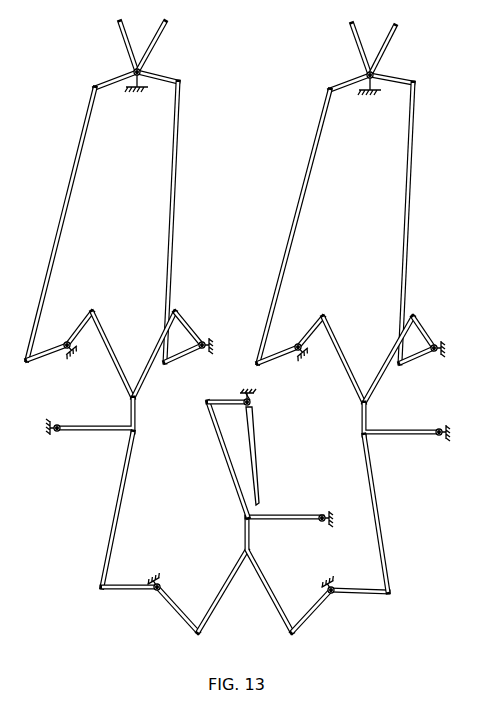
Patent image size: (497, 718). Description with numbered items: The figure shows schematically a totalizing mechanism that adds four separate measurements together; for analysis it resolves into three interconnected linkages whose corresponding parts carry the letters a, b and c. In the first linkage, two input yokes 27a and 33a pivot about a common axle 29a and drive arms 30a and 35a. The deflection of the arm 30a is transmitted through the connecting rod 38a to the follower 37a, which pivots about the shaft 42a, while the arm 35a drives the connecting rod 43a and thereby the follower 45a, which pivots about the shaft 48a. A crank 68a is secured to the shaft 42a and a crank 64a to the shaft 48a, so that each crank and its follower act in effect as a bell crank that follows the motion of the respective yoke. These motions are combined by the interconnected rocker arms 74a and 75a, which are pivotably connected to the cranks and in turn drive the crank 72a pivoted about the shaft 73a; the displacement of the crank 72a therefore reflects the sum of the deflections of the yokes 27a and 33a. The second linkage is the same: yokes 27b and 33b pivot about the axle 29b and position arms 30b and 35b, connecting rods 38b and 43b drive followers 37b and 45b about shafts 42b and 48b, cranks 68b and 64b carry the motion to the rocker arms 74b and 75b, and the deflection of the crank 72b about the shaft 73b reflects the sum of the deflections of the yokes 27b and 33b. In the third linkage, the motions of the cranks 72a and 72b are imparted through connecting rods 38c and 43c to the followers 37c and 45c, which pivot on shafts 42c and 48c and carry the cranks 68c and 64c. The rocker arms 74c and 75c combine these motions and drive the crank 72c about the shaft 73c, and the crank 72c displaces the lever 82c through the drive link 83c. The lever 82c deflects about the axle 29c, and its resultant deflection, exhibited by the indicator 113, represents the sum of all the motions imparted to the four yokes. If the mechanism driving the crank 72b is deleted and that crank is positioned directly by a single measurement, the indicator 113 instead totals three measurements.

The yoke 27a is at (120, 35).
The yoke 33a is at (158, 38).
The arm 30a is at (114, 80).
The arm 35a is at (168, 78).
The axle 29a is at (148, 87).
The connecting rod 38a is at (70, 172).
The connecting rod 43a is at (172, 190).
The follower 37a is at (38, 362).
The shaft 42a is at (67, 350).
The crank 68a is at (84, 318).
The rocker arm 74a is at (105, 333).
The rocker arm 75a is at (147, 377).
The crank 64a is at (181, 316).
The shaft 48a is at (207, 338).
The follower 45a is at (183, 357).
The crank 72a is at (110, 431).
The shaft 73a is at (52, 430).
The yoke 27b is at (352, 36).
The yoke 33b is at (392, 40).
The arm 30b is at (345, 82).
The arm 35b is at (400, 80).
The axle 29b is at (366, 90).
The connecting rod 38b is at (304, 185).
The connecting rod 43b is at (409, 190).
The follower 37b is at (285, 362).
The shaft 42b is at (303, 353).
The crank 68b is at (312, 320).
The rocker arm 74b is at (333, 331).
The rocker arm 75b is at (378, 366).
The crank 64b is at (421, 321).
The shaft 48b is at (443, 349).
The follower 45b is at (409, 362).
The crank 72b is at (415, 434).
The shaft 73b is at (443, 440).
The connecting rod 38c is at (118, 515).
The connecting rod 43c is at (385, 520).
The follower 37c is at (115, 592).
The shaft 42c is at (158, 580).
The crank 68c is at (170, 616).
The rocker arm 74c is at (226, 611).
The rocker arm 75c is at (270, 580).
The crank 64c is at (305, 628).
The shaft 48c is at (333, 597).
The follower 45c is at (375, 595).
The crank 72c is at (282, 516).
The shaft 73c is at (322, 526).
The lever 82c is at (221, 400).
The drive link 83c is at (222, 450).
The axle 29c is at (253, 401).
The indicator 113 is at (258, 450).